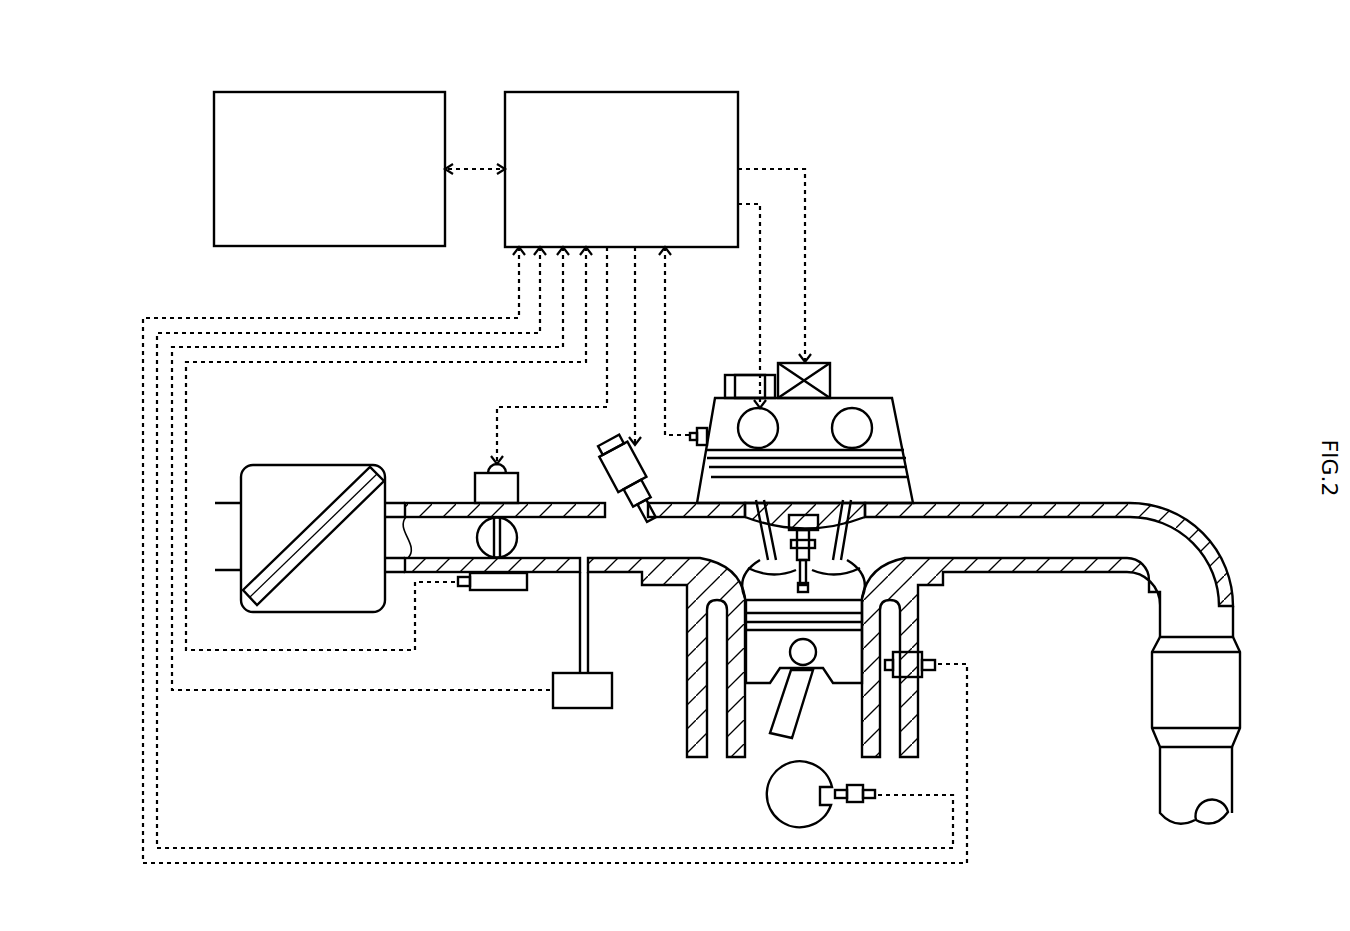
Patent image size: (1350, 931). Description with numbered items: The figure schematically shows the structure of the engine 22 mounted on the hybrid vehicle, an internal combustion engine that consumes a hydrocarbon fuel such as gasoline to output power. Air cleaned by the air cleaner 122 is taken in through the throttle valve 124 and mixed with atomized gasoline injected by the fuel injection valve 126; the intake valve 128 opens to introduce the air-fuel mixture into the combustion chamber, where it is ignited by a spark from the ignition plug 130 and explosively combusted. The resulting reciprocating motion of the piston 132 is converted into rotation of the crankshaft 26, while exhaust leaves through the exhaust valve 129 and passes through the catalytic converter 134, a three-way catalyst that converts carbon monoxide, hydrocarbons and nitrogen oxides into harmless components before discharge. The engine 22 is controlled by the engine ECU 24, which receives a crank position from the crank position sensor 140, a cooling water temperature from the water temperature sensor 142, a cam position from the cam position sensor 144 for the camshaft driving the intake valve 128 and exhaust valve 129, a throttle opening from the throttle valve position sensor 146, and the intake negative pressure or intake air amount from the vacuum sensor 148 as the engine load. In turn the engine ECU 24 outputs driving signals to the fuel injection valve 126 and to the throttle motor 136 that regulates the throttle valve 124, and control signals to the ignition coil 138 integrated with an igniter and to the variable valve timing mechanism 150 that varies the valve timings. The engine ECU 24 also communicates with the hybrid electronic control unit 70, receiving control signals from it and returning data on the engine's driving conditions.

The hybrid electronic control unit 70 is at (332, 92).
The engine electronic control unit 24 is at (622, 92).
The engine 22 is at (838, 317).
The air cleaner 122 is at (318, 465).
The throttle valve 124 is at (503, 543).
The fuel injection valve 126 is at (613, 495).
The intake valve 128 is at (800, 570).
The exhaust valve 129 is at (873, 575).
The ignition plug 130 is at (847, 570).
The piston 132 is at (763, 650).
The catalytic converter 134 is at (1153, 677).
The throttle motor 136 is at (477, 488).
The ignition coil 138 is at (830, 382).
The crank position sensor 140 is at (857, 802).
The water temperature sensor 142 is at (927, 652).
The cam position sensor 144 is at (697, 428).
The throttle valve position sensor 146 is at (503, 590).
The vacuum sensor 148 is at (583, 708).
The variable valve timing mechanism 150 is at (902, 438).
The crankshaft 26 is at (767, 795).